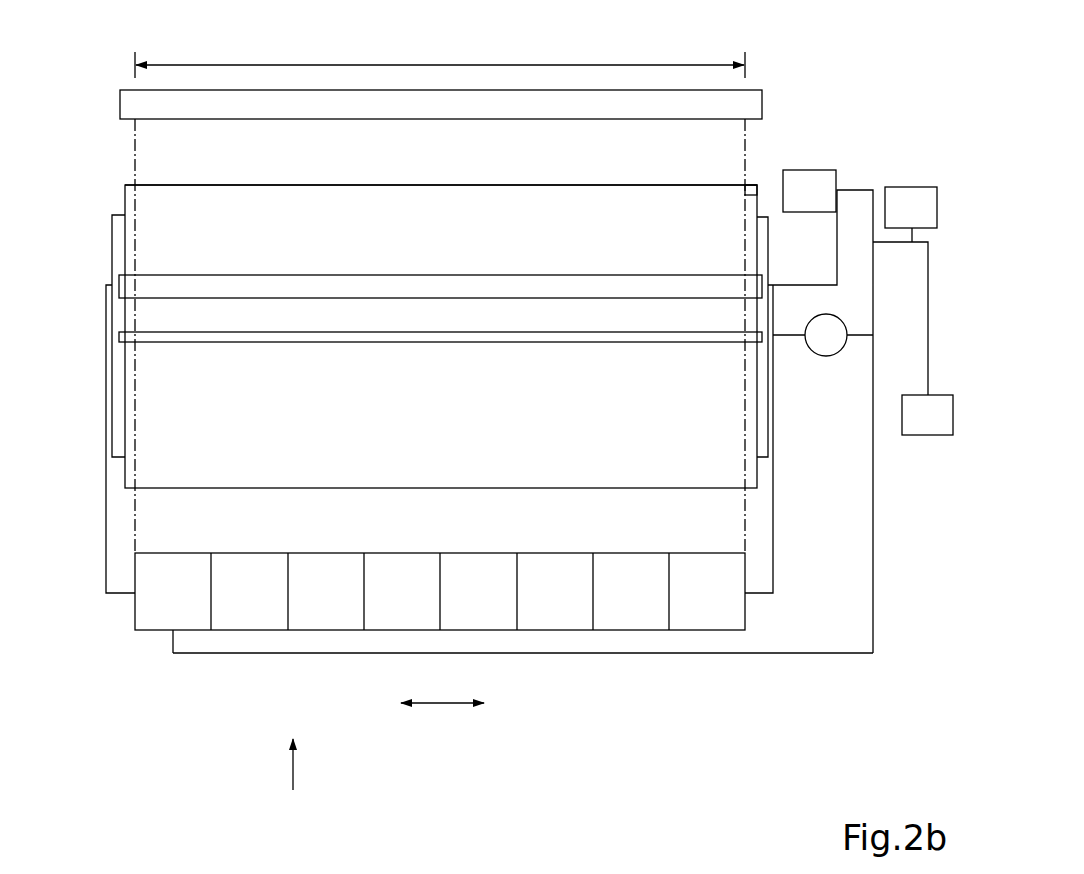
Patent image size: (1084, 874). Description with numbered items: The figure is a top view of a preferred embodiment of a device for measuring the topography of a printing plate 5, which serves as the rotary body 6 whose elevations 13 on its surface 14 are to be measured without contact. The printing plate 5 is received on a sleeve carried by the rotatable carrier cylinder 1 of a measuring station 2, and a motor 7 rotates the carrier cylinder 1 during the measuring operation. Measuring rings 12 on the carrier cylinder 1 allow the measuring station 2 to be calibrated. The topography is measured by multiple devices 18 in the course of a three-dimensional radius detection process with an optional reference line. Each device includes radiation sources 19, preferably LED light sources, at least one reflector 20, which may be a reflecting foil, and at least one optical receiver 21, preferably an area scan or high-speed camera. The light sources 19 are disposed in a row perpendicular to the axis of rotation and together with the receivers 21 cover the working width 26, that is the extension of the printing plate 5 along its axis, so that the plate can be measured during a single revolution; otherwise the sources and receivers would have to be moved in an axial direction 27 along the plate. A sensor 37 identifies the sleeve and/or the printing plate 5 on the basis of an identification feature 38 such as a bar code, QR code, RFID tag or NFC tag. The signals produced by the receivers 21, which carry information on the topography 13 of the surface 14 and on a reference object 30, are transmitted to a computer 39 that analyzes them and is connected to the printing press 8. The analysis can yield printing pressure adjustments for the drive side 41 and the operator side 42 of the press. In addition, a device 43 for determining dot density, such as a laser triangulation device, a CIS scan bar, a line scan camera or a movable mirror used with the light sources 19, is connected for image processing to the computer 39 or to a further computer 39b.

The carrier cylinder 1 is at (120, 250).
The measuring station 2 is at (729, 686).
The printing plate 5 is at (441, 314).
The rotary body 6 is at (275, 205).
The motor 7 is at (823, 357).
The printing press 8 is at (925, 423).
The measuring rings 12 is at (763, 395).
The elevations 13 is at (441, 162).
The surface 14 is at (482, 185).
The devices 18 is at (294, 782).
The radiation sources 19 is at (440, 645).
The reflector 20 is at (745, 103).
The optical receiver 21 is at (490, 612).
The working width 26 is at (415, 65).
The axial direction 27 is at (442, 705).
The reference object 30 is at (183, 337).
The sensor 37 is at (817, 177).
The identification feature 38 is at (750, 185).
The computer 39 is at (904, 261).
The further computer 39b is at (933, 157).
The drive side 41 is at (809, 686).
The operator side 42 is at (153, 684).
The device for determining dot density 43 is at (187, 280).